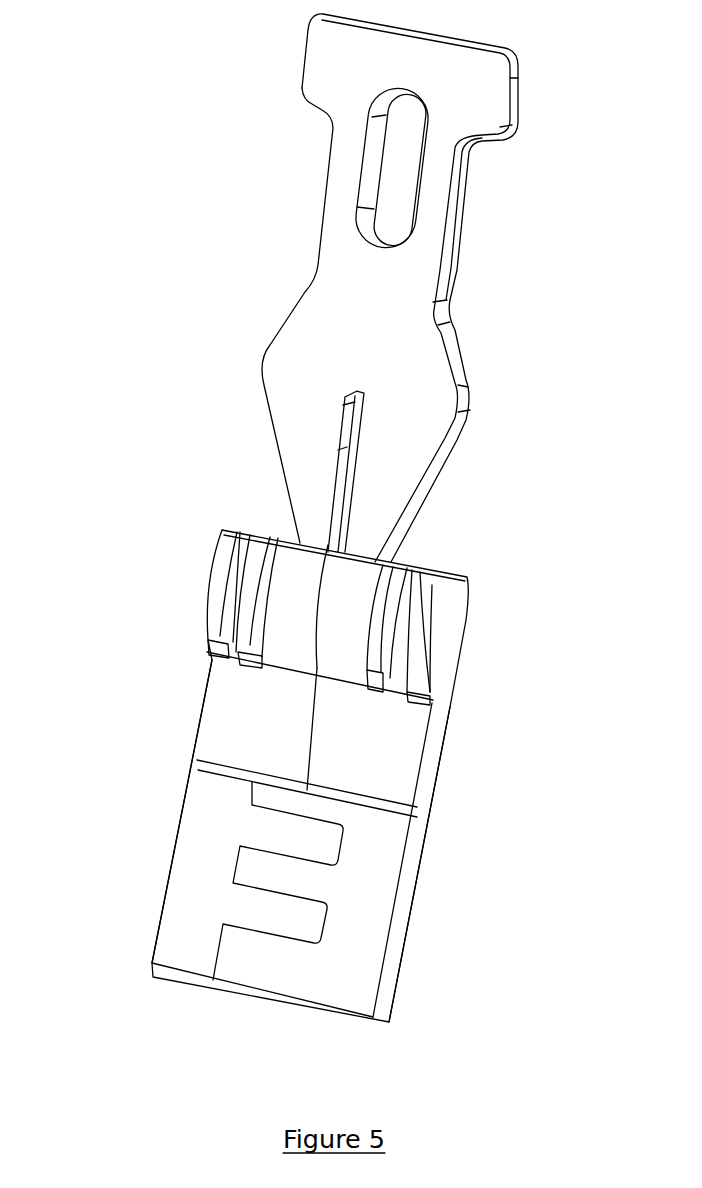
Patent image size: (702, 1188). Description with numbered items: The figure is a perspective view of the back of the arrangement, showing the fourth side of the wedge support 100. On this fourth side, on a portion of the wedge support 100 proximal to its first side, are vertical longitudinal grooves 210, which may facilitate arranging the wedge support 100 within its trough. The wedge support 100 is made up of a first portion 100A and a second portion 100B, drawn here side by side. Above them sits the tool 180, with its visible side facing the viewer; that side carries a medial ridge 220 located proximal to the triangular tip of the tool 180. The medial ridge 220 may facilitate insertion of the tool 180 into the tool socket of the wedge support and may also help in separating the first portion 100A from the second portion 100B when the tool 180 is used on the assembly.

The wedge support 100 is at (148, 538).
The first portion 100A is at (227, 738).
The second portion 100B is at (382, 768).
The tool 180 is at (458, 264).
The vertical longitudinal grooves 210 is at (277, 541).
The medial ridge 220 is at (345, 400).